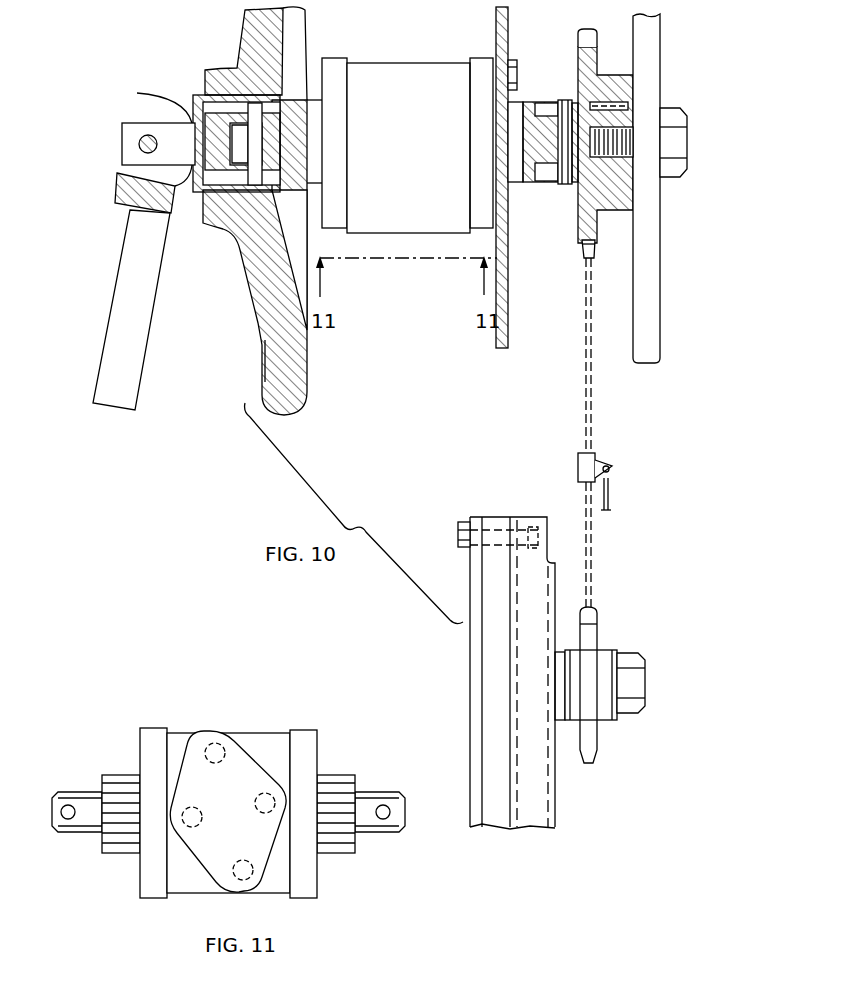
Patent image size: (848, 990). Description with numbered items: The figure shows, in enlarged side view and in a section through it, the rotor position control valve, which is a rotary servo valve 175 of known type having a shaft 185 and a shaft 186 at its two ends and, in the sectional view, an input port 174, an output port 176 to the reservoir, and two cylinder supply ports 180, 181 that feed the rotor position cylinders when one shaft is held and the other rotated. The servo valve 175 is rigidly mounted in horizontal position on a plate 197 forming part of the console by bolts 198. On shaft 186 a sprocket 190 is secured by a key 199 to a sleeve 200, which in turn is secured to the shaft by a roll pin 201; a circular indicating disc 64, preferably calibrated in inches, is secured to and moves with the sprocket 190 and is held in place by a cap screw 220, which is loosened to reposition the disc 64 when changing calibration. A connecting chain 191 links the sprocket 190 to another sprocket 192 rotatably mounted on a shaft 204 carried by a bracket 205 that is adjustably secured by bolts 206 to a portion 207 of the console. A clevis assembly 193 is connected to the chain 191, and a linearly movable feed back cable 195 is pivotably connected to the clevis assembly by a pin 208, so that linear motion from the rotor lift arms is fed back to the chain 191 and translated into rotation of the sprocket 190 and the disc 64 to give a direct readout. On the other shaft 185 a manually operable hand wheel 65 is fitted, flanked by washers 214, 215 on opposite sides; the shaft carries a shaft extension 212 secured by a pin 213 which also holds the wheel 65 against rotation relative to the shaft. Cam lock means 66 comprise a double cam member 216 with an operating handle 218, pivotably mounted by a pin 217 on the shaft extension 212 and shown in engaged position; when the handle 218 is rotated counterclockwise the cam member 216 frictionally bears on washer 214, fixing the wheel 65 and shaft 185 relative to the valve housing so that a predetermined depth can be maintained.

In FIG. 10, the indicating disc 64 is at (661, 228).
In FIG. 10, the hand wheel 65 is at (257, 292).
In FIG. 10, the cam lock means 66 is at (165, 93).
In FIG. 11, the input port 174 is at (270, 814).
In FIG. 10, the rotary servo valve 175 is at (425, 68).
In FIG. 11, the rotary servo valve 175 is at (255, 732).
In FIG. 11, the output port 176 is at (198, 828).
In FIG. 11, the cylinder supply port 180 is at (221, 765).
In FIG. 11, the cylinder supply port 181 is at (235, 872).
In FIG. 10, the shaft 185 is at (273, 123).
In FIG. 11, the shaft 185 is at (78, 793).
In FIG. 10, the shaft 186 is at (545, 125).
In FIG. 11, the shaft 186 is at (380, 790).
In FIG. 10, the sprocket 190 is at (582, 252).
In FIG. 10, the connecting chain 191 is at (592, 565).
In FIG. 10, the sprocket 192 is at (597, 632).
In FIG. 10, the clevis assembly 193 is at (578, 466).
In FIG. 10, the feed back cable 195 is at (610, 503).
In FIG. 10, the plate 197 is at (505, 300).
In FIG. 10, the bolts 198 is at (514, 62).
In FIG. 10, the key 199 is at (617, 100).
In FIG. 10, the sleeve 200 is at (557, 182).
In FIG. 10, the roll pin 201 is at (567, 185).
In FIG. 10, the shaft 204 is at (623, 707).
In FIG. 10, the bracket 205 is at (553, 800).
In FIG. 10, the bolts 206 is at (463, 520).
In FIG. 10, the portion of the console 207 is at (470, 570).
In FIG. 10, the pin 208 is at (609, 466).
In FIG. 10, the shaft extension 212 is at (204, 206).
In FIG. 10, the pin 213 is at (255, 188).
In FIG. 10, the washer 214 is at (199, 103).
In FIG. 10, the washer 215 is at (305, 197).
In FIG. 10, the double cam member 216 is at (137, 108).
In FIG. 10, the pin 217 is at (141, 144).
In FIG. 10, the operating handle 218 is at (112, 318).
In FIG. 10, the cap screw 220 is at (690, 140).